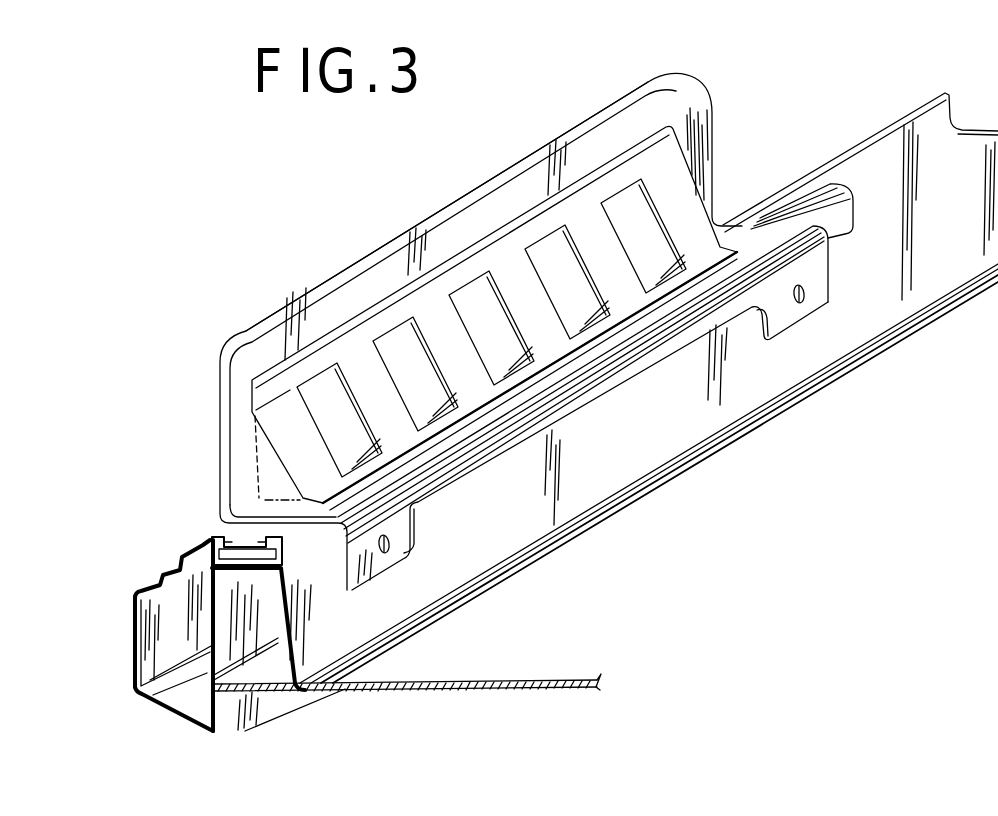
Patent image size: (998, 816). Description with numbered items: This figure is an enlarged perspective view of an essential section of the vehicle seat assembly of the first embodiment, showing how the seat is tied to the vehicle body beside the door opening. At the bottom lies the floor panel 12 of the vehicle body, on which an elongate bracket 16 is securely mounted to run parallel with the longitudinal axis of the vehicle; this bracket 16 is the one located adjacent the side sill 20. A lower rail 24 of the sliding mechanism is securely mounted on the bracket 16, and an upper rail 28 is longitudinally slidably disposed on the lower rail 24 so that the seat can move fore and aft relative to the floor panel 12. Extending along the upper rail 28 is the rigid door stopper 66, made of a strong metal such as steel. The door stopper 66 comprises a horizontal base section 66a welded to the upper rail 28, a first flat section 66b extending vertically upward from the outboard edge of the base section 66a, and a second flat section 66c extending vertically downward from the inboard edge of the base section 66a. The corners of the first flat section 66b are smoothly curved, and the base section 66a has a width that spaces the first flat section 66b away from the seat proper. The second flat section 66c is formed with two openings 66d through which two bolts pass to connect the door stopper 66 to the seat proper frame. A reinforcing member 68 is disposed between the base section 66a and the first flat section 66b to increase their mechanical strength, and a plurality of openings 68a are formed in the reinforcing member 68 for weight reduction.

The floor panel 12 is at (548, 682).
The bracket 16 is at (388, 606).
The side sill 20 is at (137, 644).
The lower rail 24 is at (288, 563).
The upper rail 28 is at (222, 528).
The door stopper 66 is at (714, 114).
The horizontal base section 66a is at (746, 234).
The first flat section 66b is at (512, 190).
The second flat section 66c is at (473, 461).
The openings 66d is at (388, 548).
The reinforcing member 68 is at (362, 330).
The openings 68a is at (417, 382).